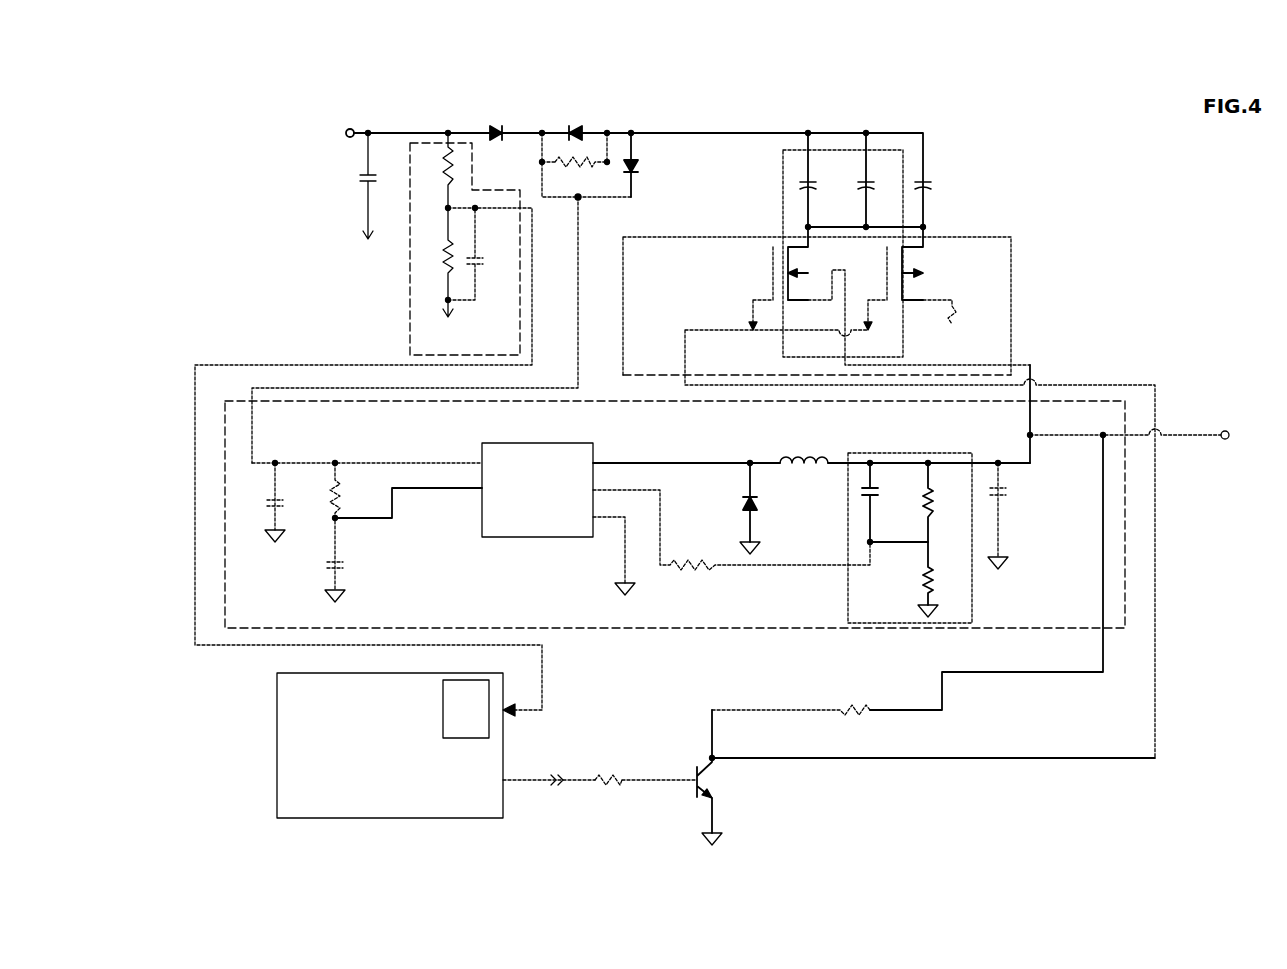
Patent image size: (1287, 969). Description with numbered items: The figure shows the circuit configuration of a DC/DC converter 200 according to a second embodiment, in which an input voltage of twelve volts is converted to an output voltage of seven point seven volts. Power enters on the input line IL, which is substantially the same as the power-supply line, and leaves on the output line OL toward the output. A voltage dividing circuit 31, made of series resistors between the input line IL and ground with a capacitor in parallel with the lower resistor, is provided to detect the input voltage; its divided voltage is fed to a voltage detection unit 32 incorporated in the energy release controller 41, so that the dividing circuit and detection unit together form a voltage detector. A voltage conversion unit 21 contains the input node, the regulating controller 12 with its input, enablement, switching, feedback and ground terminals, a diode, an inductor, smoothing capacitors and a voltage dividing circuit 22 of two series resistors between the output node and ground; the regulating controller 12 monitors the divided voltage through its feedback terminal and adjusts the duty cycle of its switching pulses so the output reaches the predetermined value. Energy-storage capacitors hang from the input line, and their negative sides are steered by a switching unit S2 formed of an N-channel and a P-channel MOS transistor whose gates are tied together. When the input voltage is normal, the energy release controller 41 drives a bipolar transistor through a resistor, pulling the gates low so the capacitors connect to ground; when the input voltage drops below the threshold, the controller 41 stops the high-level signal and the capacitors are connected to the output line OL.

The DC/DC converter 200 is at (306, 53).
The regulating controller 12 is at (527, 540).
The voltage conversion unit 21 is at (1130, 553).
The voltage dividing circuit 22 is at (975, 603).
The voltage dividing circuit 31 is at (410, 320).
The voltage detection unit 32 is at (477, 678).
The energy release controller 41 is at (398, 820).
The switching unit S2 is at (1012, 268).
The input line IL is at (423, 129).
The output line OL is at (1185, 432).